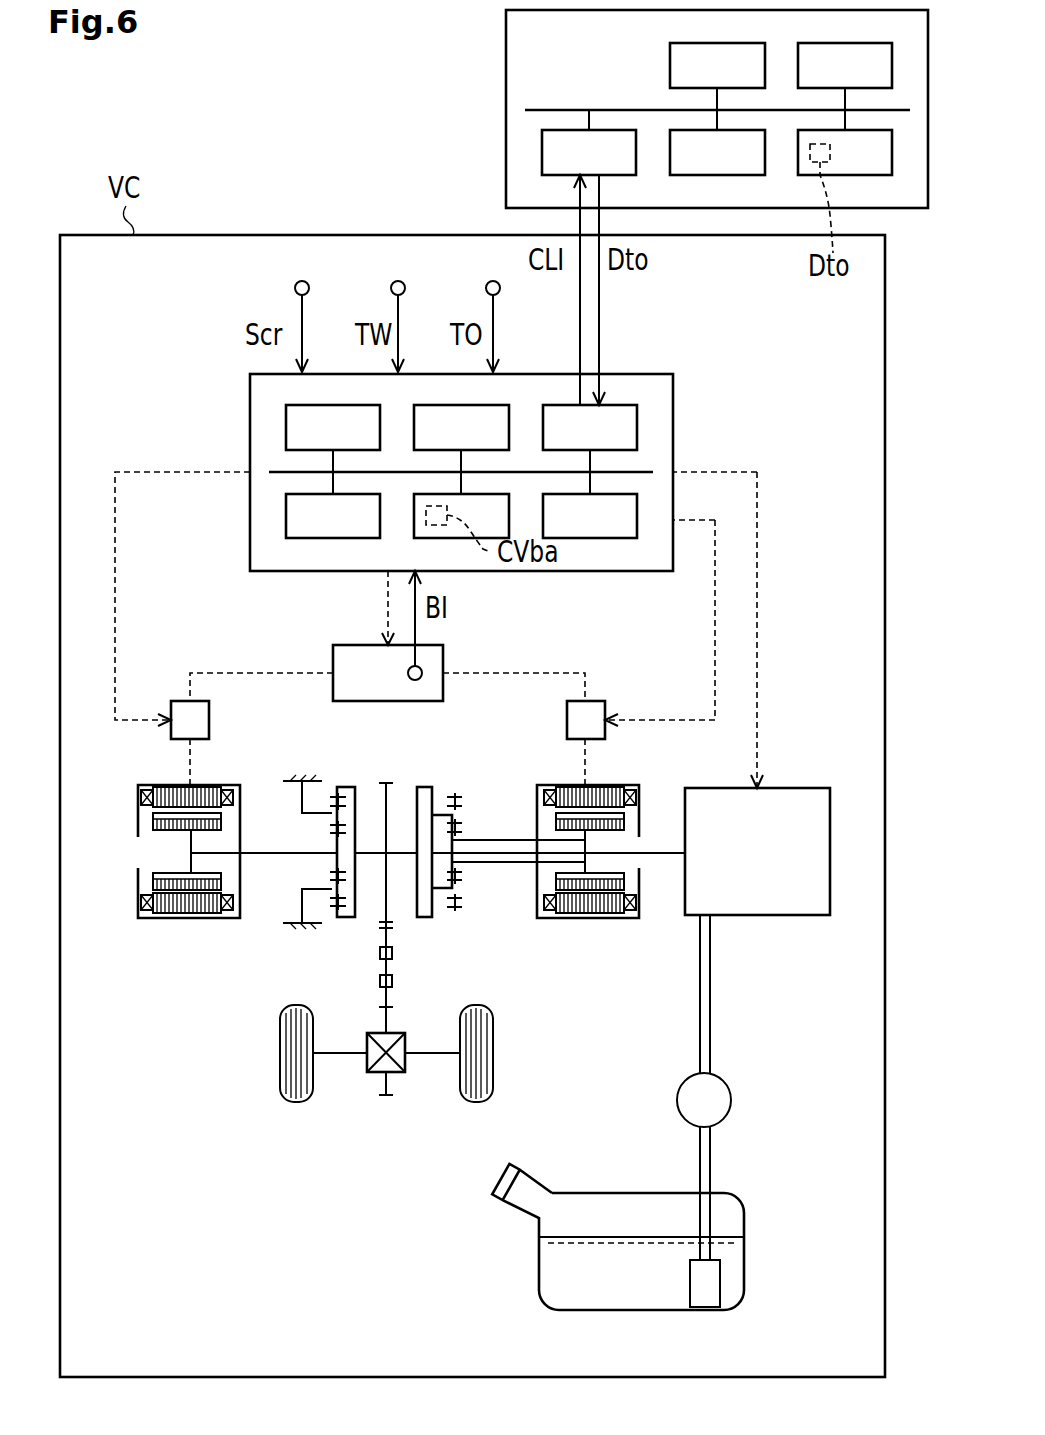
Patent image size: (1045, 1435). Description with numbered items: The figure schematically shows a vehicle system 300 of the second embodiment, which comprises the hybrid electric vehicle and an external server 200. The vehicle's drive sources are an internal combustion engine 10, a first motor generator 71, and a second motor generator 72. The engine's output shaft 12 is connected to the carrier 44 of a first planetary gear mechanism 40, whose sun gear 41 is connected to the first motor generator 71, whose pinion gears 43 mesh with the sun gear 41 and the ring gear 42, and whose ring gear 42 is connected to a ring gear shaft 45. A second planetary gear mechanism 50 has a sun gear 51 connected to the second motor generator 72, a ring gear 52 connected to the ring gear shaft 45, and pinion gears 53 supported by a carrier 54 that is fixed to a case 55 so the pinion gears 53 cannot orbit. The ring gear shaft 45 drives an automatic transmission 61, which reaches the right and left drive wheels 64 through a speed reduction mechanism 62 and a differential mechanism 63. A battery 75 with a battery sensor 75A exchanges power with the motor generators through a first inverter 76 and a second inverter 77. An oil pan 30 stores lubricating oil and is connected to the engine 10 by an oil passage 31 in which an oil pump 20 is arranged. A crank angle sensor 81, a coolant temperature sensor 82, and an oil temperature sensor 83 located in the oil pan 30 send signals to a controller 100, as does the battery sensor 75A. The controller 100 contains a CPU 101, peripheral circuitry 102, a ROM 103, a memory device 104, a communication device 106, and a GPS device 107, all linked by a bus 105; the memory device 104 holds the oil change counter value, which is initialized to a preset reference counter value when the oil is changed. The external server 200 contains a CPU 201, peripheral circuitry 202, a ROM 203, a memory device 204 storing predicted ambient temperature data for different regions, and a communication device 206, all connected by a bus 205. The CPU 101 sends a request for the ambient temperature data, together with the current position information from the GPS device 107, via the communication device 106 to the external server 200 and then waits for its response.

The vehicle system 300 is at (320, 117).
The external server 200 is at (506, 51).
The CPU 201 is at (735, 43).
The peripheral circuitry 202 is at (730, 175).
The ROM 203 is at (863, 43).
The memory device 204 is at (848, 175).
The bus 205 is at (512, 113).
The communication device 206 is at (616, 175).
The controller 100 is at (673, 405).
The CPU 101 is at (333, 403).
The peripheral circuitry 102 is at (333, 540).
The ROM 103 is at (446, 403).
The memory device 104 is at (446, 540).
The bus 105 is at (654, 472).
The communication device 106 is at (562, 403).
The GPS device 107 is at (590, 538).
The crank angle sensor 81 is at (295, 289).
The coolant temperature sensor 82 is at (391, 289).
The oil temperature sensor 83 is at (486, 289).
The battery 75 is at (355, 645).
The battery sensor 75A is at (422, 671).
The first inverter 76 is at (586, 701).
The second inverter 77 is at (181, 701).
The second motor generator 72 is at (138, 865).
The first motor generator 71 is at (624, 786).
The second planetary gear mechanism 50 is at (284, 767).
The sun gear 51 is at (335, 842).
The ring gear 52 is at (337, 795).
The pinion gears 53 is at (335, 905).
The carrier 54 is at (315, 889).
The case 55 is at (283, 923).
The first planetary gear mechanism 40 is at (459, 776).
The sun gear 41 is at (454, 878).
The ring gear 42 is at (454, 799).
The pinion gears 43 is at (454, 820).
The carrier 44 is at (442, 905).
The ring gear shaft 45 is at (388, 830).
The output shaft 12 is at (666, 855).
The internal combustion engine 10 is at (810, 915).
The oil pump 20 is at (731, 1095).
The oil pan 30 is at (744, 1226).
The oil passage 31 is at (700, 1165).
The automatic transmission 61 is at (393, 953).
The speed reduction mechanism 62 is at (393, 988).
The differential mechanism 63 is at (373, 1072).
The drive wheels 64 is at (280, 1064).